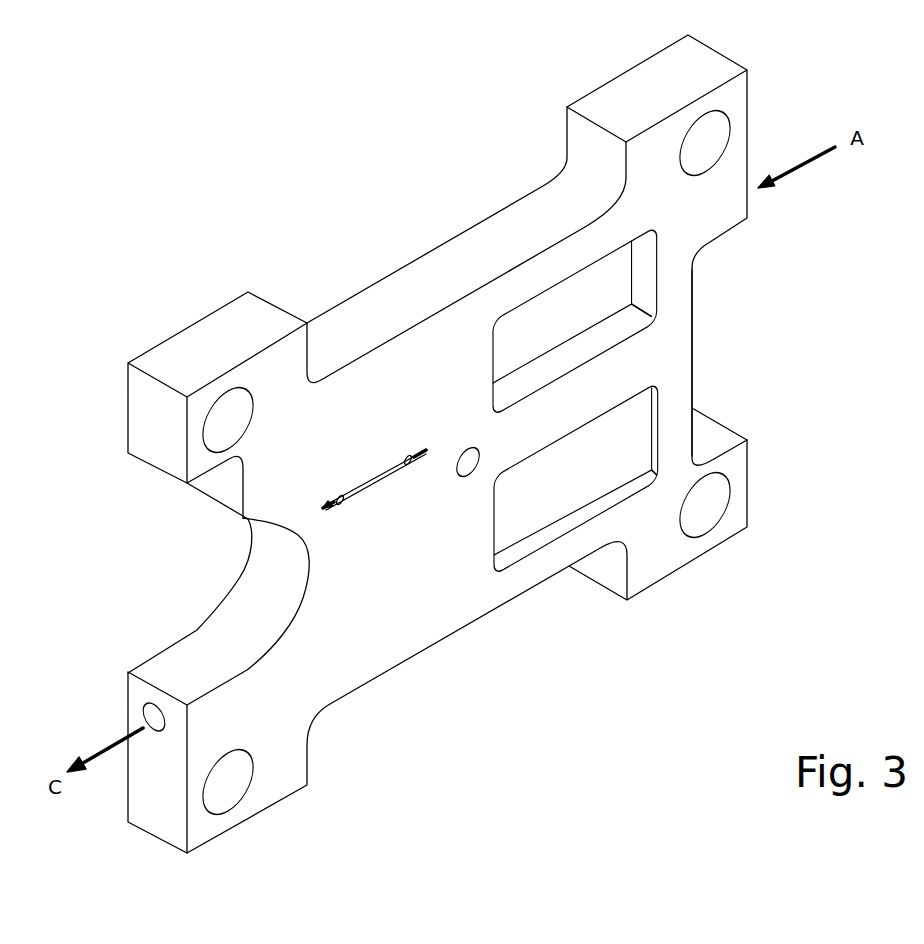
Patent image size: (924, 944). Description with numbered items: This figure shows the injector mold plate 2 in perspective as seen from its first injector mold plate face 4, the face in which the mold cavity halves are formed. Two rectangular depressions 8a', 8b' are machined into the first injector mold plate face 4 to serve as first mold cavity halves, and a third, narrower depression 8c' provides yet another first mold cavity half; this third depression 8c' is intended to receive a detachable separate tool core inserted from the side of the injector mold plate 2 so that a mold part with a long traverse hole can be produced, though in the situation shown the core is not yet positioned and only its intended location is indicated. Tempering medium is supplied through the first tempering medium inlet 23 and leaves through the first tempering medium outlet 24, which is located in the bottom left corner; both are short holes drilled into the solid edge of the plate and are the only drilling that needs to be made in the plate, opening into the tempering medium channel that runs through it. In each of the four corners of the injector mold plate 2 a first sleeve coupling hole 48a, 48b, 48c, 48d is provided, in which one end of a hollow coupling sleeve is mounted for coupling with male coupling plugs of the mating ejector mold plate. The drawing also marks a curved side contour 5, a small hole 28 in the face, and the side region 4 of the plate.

The injector mold plate 2 is at (513, 158).
The first injector mold plate face 4 is at (682, 318).
The curved guide surface 5 is at (238, 573).
The first mold cavity half 8a' is at (576, 532).
The first mold cavity half 8b' is at (558, 290).
The first mold cavity half 8c' is at (367, 466).
The first tempering medium inlet 23 is at (752, 173).
The first tempering medium outlet 24 is at (157, 729).
The hole 28 is at (465, 475).
The first sleeve coupling hole 48a is at (228, 422).
The first sleeve coupling hole 48b is at (697, 145).
The first sleeve coupling hole 48c is at (712, 512).
The first sleeve coupling hole 48d is at (233, 773).